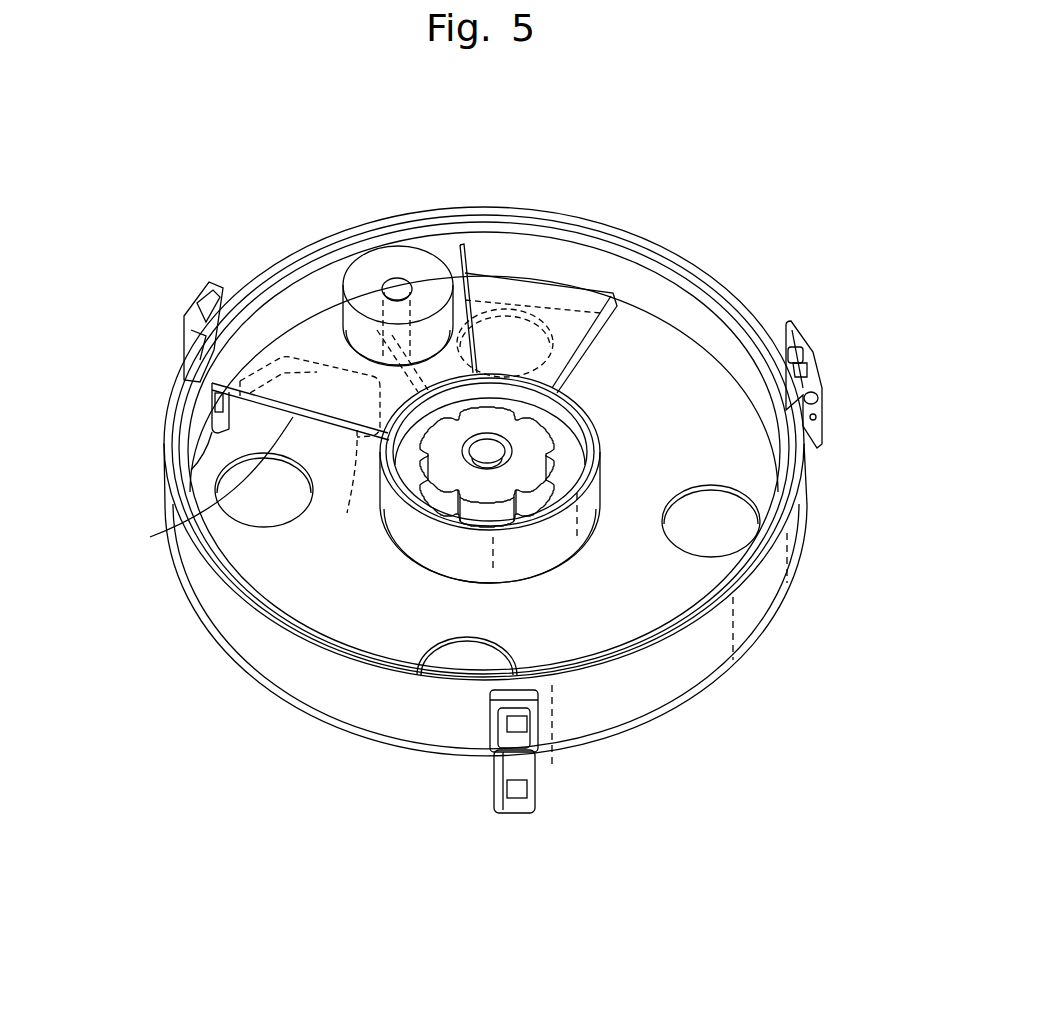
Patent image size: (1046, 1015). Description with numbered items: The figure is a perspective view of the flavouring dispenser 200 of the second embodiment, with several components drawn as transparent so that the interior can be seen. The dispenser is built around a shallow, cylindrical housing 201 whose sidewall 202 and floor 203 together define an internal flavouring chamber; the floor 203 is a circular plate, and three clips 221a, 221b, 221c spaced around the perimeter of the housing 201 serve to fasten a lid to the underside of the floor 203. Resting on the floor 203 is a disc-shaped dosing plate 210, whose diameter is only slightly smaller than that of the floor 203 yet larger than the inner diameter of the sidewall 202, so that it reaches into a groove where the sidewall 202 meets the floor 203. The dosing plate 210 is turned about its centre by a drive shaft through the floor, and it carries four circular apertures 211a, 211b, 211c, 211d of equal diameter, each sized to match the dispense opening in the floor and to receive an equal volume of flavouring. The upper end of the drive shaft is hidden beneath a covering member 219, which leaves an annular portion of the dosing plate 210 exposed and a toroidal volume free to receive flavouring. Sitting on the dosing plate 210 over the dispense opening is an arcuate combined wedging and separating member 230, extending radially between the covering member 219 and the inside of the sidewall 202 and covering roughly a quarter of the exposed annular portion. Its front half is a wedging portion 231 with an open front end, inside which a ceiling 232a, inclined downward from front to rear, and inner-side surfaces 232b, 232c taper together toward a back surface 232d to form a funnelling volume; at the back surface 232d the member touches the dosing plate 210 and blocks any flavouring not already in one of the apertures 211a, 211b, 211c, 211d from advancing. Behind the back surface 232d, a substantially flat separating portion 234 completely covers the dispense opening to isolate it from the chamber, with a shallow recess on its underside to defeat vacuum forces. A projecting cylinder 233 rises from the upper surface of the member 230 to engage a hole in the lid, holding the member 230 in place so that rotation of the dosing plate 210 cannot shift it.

The flavouring dispenser 200 is at (714, 203).
The housing 201 is at (700, 714).
The sidewall 202 is at (762, 614).
The floor 203 is at (626, 735).
The dosing plate 210 is at (710, 380).
The circular aperture 211a is at (735, 522).
The circular aperture 211b is at (440, 657).
The circular aperture 211c is at (236, 490).
The circular aperture 211d is at (508, 296).
The covering member 219 is at (546, 538).
The clip 221a is at (814, 372).
The clip 221b is at (515, 813).
The clip 221c is at (186, 320).
The combined wedging and separating member 230 is at (440, 245).
The wedging portion 231 is at (288, 326).
The ceiling 232a is at (292, 422).
The inner-side surface 232b is at (344, 485).
The inner-side surface 232c is at (220, 416).
The back surface 232d is at (240, 381).
The projecting cylinder 233 is at (374, 282).
The separating portion 234 is at (589, 276).